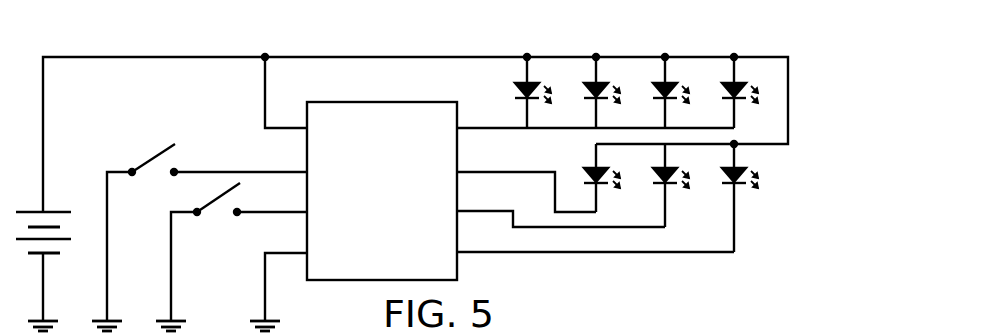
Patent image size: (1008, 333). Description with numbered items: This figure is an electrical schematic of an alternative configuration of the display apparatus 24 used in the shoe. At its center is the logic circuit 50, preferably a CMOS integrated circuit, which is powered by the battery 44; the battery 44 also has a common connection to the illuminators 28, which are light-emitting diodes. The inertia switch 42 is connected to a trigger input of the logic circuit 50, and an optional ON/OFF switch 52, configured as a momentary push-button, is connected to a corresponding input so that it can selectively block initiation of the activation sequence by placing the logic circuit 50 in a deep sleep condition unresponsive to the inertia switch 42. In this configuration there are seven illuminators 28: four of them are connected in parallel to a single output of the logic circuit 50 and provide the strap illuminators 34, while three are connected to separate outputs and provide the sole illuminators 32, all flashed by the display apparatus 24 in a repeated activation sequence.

The display apparatus 24 is at (421, 173).
The illuminators 28 is at (670, 173).
The sole illuminators 32 is at (742, 186).
The strap illuminators 34 is at (742, 78).
The inertia switch 42 is at (207, 205).
The battery 44 is at (54, 212).
The logic circuit 50 is at (363, 280).
The ON/OFF switch 52 is at (152, 157).